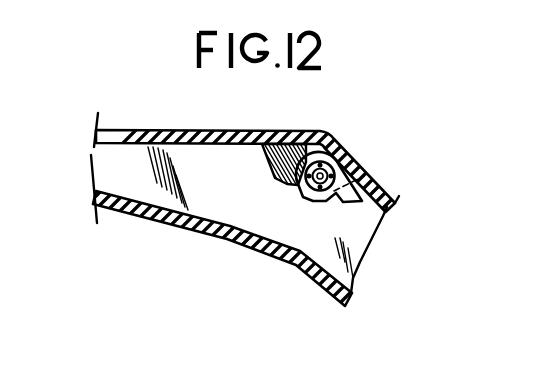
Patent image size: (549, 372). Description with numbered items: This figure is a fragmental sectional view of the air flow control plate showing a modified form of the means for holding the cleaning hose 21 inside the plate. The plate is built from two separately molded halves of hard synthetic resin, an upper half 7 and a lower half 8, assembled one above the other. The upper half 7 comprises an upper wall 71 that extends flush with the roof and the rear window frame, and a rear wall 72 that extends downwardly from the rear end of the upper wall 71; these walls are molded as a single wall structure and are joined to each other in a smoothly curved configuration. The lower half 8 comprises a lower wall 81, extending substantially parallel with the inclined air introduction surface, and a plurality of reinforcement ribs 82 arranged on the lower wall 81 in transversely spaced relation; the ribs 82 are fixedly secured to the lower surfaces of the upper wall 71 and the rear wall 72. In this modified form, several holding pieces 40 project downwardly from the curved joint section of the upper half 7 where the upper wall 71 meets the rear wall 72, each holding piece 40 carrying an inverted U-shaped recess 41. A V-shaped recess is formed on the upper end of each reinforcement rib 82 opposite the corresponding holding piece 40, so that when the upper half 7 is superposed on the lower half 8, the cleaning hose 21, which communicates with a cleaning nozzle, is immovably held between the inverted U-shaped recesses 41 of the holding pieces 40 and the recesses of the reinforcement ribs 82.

The upper half 7 is at (384, 162).
The upper wall 71 is at (198, 131).
The rear wall 72 is at (359, 161).
The lower half 8 is at (355, 299).
The lower wall 81 is at (277, 254).
The reinforcement rib 82 is at (370, 241).
The holding piece 40 is at (295, 150).
The inverted U-shaped recess 41 is at (301, 186).
The cleaning hose 21 is at (322, 191).